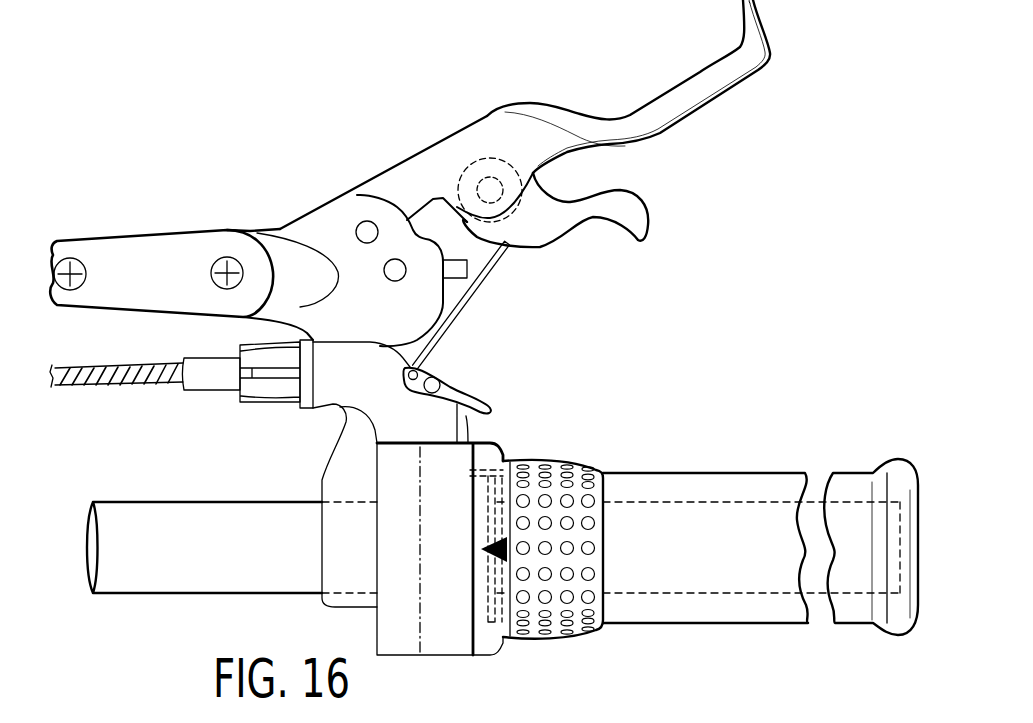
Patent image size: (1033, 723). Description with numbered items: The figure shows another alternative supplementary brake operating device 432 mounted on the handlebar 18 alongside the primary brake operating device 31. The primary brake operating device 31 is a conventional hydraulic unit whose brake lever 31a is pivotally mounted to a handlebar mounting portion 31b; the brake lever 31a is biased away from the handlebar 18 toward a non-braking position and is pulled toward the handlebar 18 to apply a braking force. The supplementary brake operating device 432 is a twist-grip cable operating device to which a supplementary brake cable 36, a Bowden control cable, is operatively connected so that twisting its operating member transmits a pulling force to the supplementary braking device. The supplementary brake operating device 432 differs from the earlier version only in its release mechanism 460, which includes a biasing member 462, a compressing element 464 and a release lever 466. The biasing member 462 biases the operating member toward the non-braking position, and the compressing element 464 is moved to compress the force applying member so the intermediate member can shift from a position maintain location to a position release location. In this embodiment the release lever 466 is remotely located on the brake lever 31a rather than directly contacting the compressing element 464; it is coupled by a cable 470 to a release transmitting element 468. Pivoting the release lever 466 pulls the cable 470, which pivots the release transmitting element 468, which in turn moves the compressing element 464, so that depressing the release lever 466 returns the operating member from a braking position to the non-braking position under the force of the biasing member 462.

The handlebar 18 is at (140, 593).
The primary brake operating device 31 is at (323, 190).
The brake lever 31a is at (573, 104).
The handlebar mounting portion 31b is at (170, 233).
The supplementary brake cable 36 is at (204, 392).
The supplementary brake operating device 432 is at (716, 161).
The release mechanism 460 is at (688, 283).
The biasing member 462 is at (497, 470).
The compressing element 464 is at (473, 428).
The release lever 466 is at (643, 242).
The release transmitting element 468 is at (454, 373).
The cable 470 is at (483, 287).